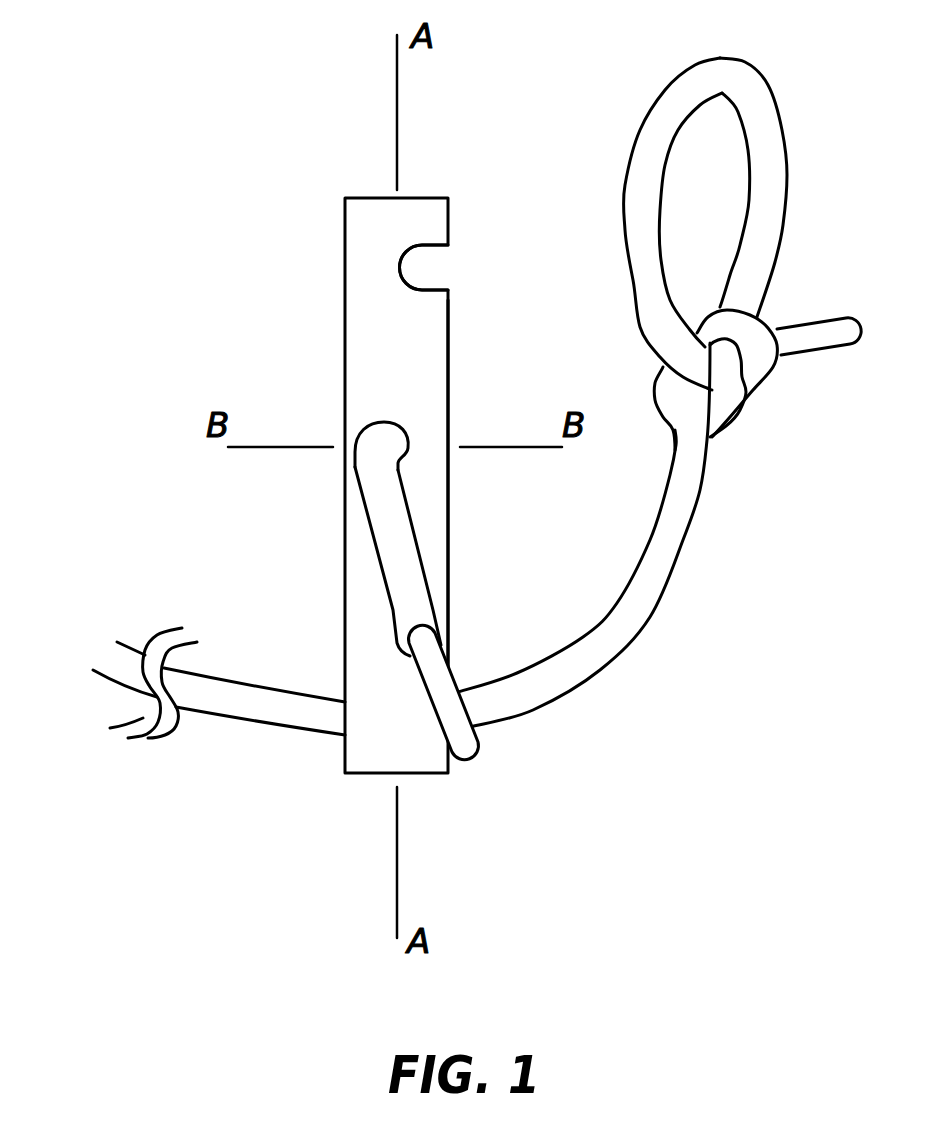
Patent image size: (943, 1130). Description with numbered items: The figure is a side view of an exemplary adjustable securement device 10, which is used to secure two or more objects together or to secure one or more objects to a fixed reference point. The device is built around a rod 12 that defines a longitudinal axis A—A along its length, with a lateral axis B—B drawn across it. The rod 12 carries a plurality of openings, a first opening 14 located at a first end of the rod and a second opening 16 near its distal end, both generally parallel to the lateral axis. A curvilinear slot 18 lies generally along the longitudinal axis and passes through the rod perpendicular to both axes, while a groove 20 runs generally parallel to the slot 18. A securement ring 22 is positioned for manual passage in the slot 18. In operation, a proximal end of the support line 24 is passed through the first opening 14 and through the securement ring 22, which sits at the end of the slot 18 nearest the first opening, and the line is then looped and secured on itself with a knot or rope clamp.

The adjustable securement device 10 is at (184, 238).
The rod 12 is at (385, 357).
The first opening 14 is at (340, 717).
The second opening 16 is at (450, 345).
The curvilinear slot 18 is at (405, 553).
The groove 20 is at (405, 280).
The securement ring 22 is at (458, 733).
The support line 24 is at (663, 537).